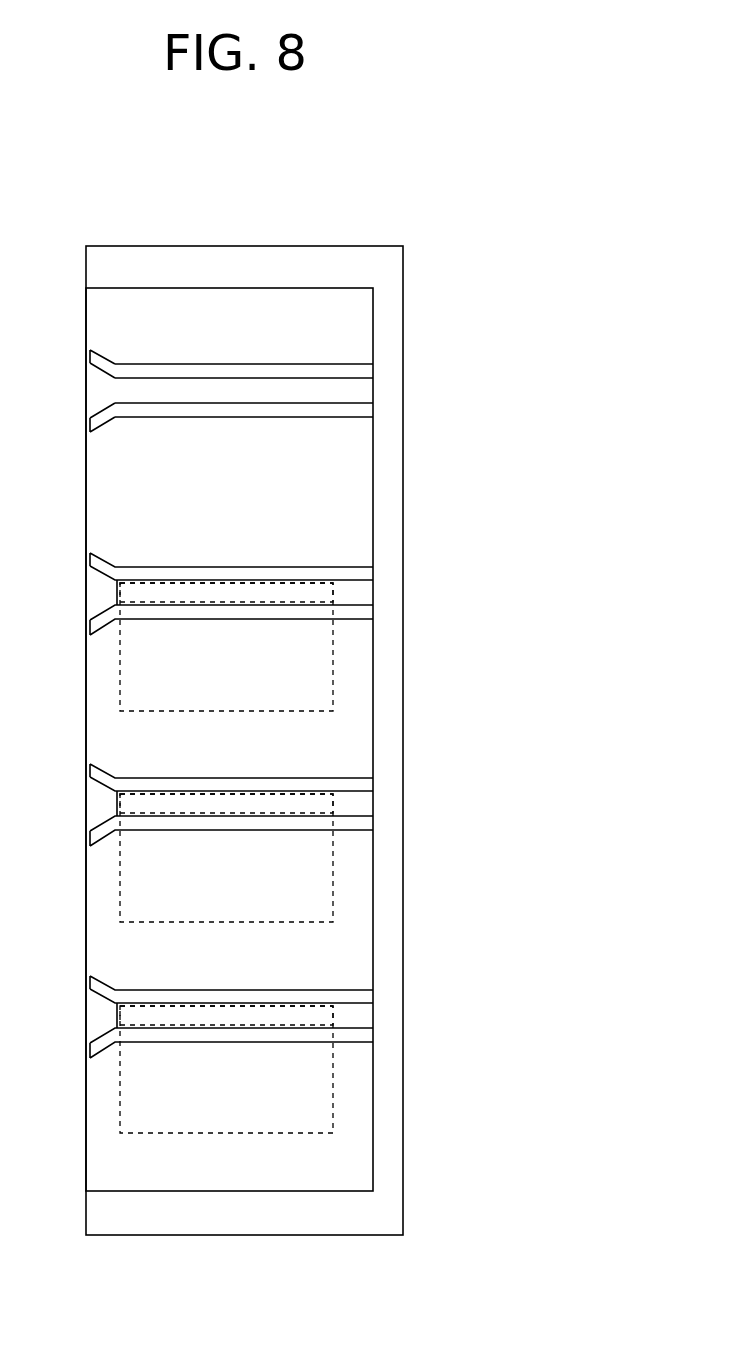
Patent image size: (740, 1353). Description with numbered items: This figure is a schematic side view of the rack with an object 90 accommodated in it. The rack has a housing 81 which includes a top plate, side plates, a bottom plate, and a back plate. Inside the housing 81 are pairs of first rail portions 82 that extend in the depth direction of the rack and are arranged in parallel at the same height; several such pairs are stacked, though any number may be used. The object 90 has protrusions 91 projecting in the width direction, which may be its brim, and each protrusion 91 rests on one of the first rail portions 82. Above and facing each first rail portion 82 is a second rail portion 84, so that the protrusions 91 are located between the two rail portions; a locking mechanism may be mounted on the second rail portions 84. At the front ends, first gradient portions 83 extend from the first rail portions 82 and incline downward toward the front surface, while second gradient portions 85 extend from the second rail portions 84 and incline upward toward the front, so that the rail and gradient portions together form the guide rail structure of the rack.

The housing 81 is at (355, 246).
The first rail portion 82 is at (252, 415).
The first gradient portion 83 is at (102, 428).
The second rail portion 84 is at (225, 363).
The second gradient portion 85 is at (110, 363).
The object 90 is at (238, 711).
The protrusion 91 is at (275, 582).